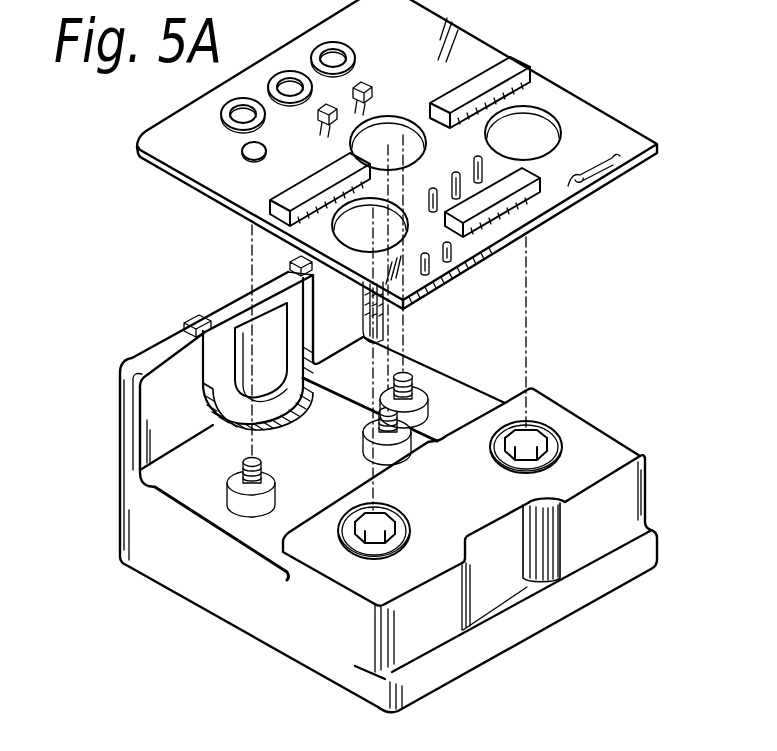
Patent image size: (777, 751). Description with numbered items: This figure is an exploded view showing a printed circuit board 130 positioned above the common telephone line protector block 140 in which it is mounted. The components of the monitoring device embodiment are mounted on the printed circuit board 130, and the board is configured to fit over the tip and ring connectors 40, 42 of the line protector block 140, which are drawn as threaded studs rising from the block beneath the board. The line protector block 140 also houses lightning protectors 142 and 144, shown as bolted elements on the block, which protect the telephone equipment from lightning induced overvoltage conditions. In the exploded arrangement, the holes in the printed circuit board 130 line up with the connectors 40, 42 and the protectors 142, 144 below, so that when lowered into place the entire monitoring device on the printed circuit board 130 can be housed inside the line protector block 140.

The printed circuit board 130 is at (598, 112).
The telephone line protector block 140 is at (610, 433).
The lightning protector 142 is at (532, 430).
The lightning protector 144 is at (357, 555).
The ring connector 42 is at (398, 379).
The tip connector 40 is at (237, 503).